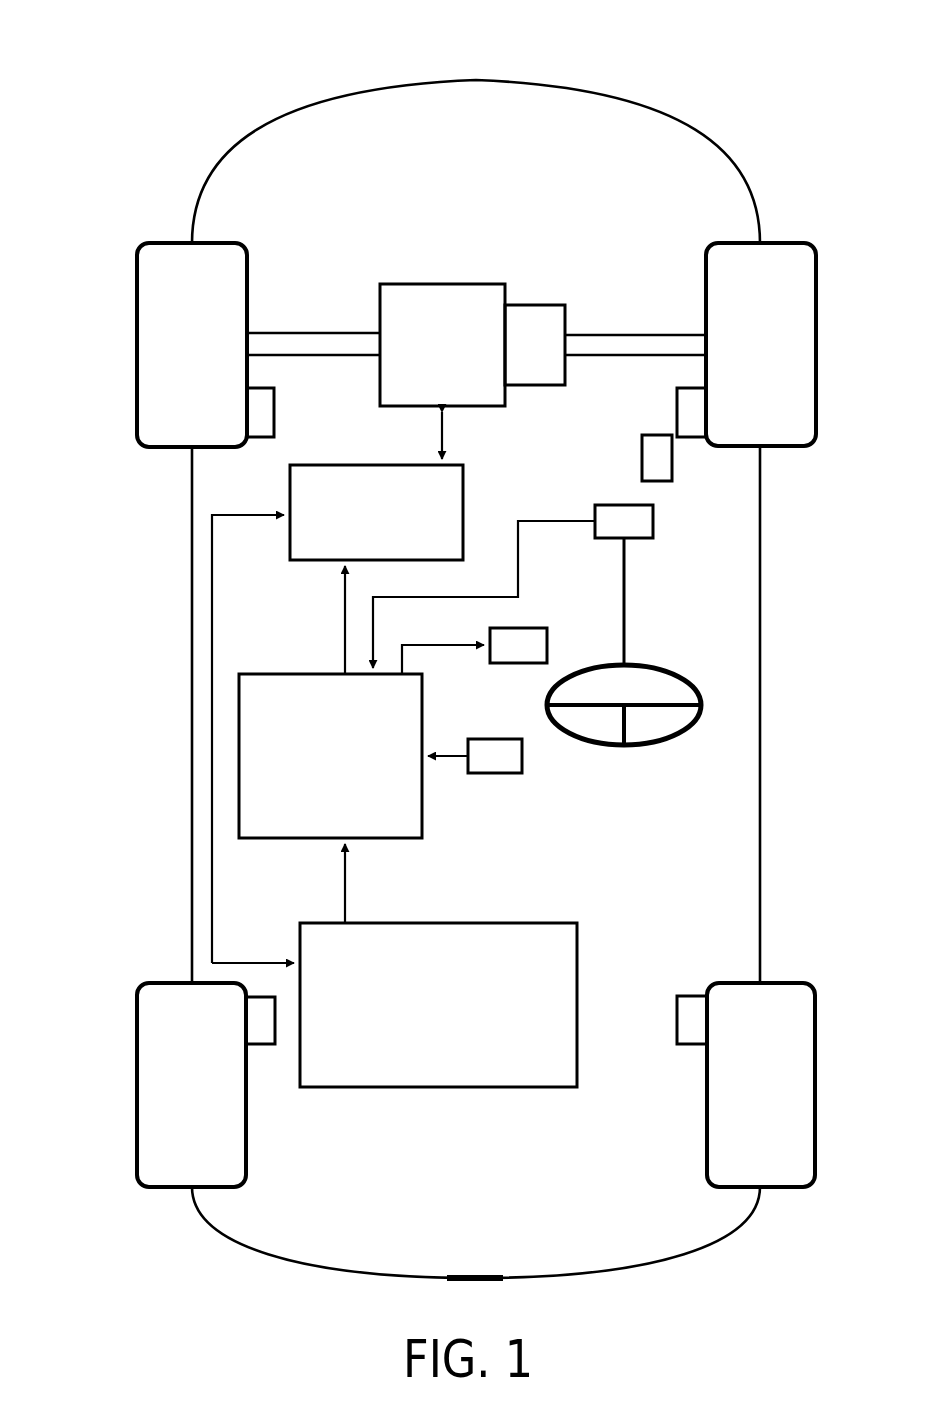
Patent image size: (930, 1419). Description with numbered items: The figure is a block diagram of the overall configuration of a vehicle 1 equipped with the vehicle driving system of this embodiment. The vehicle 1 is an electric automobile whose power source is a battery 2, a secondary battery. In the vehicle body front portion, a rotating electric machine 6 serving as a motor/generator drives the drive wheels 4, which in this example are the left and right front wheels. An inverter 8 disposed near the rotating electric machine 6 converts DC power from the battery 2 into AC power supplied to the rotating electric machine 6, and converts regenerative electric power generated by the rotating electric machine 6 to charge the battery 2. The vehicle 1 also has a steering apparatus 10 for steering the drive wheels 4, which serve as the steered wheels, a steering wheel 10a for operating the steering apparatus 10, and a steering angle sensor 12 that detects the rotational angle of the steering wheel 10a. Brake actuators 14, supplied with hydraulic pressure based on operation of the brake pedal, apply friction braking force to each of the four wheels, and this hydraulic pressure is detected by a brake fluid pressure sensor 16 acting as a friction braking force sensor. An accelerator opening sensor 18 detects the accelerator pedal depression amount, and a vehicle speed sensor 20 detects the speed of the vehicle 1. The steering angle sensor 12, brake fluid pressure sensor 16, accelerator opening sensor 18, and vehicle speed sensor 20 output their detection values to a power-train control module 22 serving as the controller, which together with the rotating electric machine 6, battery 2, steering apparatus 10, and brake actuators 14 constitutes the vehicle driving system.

The vehicle 1 is at (766, 106).
The battery 2 is at (467, 921).
The drive wheels 4 is at (137, 343).
The rotating electric machine 6 is at (440, 284).
The inverter 8 is at (463, 488).
The steering apparatus 10 is at (624, 590).
The steering wheel 10a is at (650, 746).
The steering angle sensor 12 is at (653, 522).
The brake actuators 14 is at (277, 410).
The brake fluid pressure sensor 16 is at (505, 773).
The accelerator opening sensor 18 is at (672, 470).
The vehicle speed sensor 20 is at (507, 663).
The power-train control module (PCM) 22 is at (280, 672).